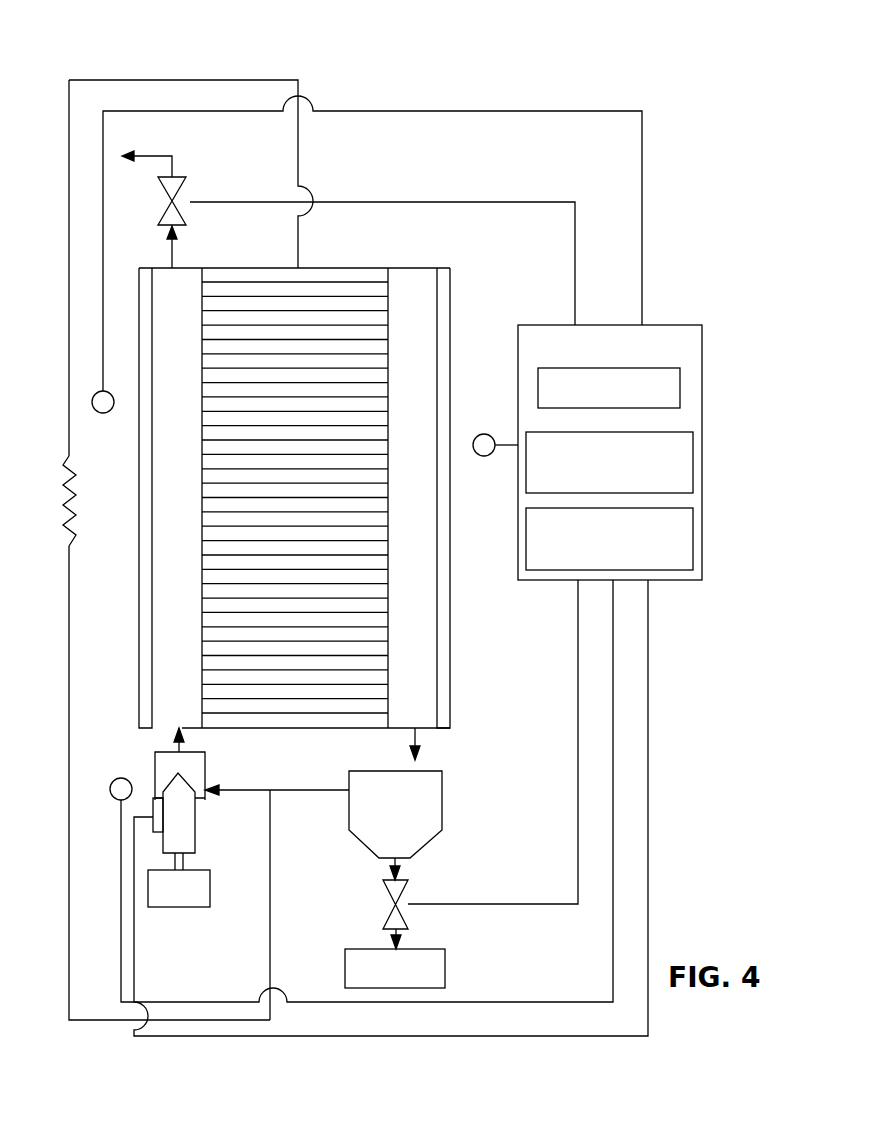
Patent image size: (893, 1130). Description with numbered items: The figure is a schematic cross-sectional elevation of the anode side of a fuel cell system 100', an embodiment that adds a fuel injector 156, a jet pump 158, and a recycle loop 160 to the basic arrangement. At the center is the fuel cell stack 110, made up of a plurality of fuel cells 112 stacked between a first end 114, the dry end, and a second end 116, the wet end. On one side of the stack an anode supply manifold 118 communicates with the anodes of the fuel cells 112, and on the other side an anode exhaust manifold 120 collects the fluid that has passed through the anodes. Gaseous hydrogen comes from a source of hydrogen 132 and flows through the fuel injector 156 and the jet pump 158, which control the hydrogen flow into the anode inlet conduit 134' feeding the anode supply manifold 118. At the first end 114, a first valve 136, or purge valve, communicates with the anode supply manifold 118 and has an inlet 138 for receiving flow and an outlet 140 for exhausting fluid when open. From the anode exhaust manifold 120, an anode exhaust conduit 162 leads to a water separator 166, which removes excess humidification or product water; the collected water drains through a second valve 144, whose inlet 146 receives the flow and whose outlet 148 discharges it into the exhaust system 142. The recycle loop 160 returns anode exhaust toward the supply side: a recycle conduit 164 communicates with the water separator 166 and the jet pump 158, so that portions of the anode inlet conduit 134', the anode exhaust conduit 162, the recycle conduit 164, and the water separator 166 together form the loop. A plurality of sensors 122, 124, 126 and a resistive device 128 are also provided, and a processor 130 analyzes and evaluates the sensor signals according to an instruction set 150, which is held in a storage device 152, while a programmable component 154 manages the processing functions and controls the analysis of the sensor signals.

The fuel cell system 100' is at (388, 523).
The fuel cell stack 110 is at (297, 483).
The fuel cells 112 is at (377, 333).
The first end 114 is at (260, 268).
The second end 116 is at (348, 714).
The anode supply manifold 118 is at (150, 634).
The anode exhaust manifold 120 is at (440, 644).
The sensor 122 is at (103, 413).
The sensor 124 is at (116, 778).
The sensor 126 is at (484, 434).
The resistive device 128 is at (80, 525).
The processor 130 is at (631, 429).
The source of hydrogen 132 is at (177, 907).
The anode inlet conduit 134' is at (174, 791).
The first valve 136 is at (186, 180).
The inlet 138 is at (176, 246).
The outlet 140 is at (176, 152).
The exhaust system 142 is at (345, 969).
The second valve 144 is at (386, 893).
The inlet 146 is at (402, 866).
The outlet 148 is at (402, 932).
The instruction set 150 is at (683, 368).
The storage device 152 is at (686, 432).
The programmable component 154 is at (685, 508).
The fuel injector 156 is at (198, 840).
The jet pump 158 is at (205, 766).
The recycle loop 160 is at (318, 850).
The anode exhaust conduit 162 is at (422, 740).
The recycle conduit 164 is at (288, 790).
The water separator 166 is at (444, 797).